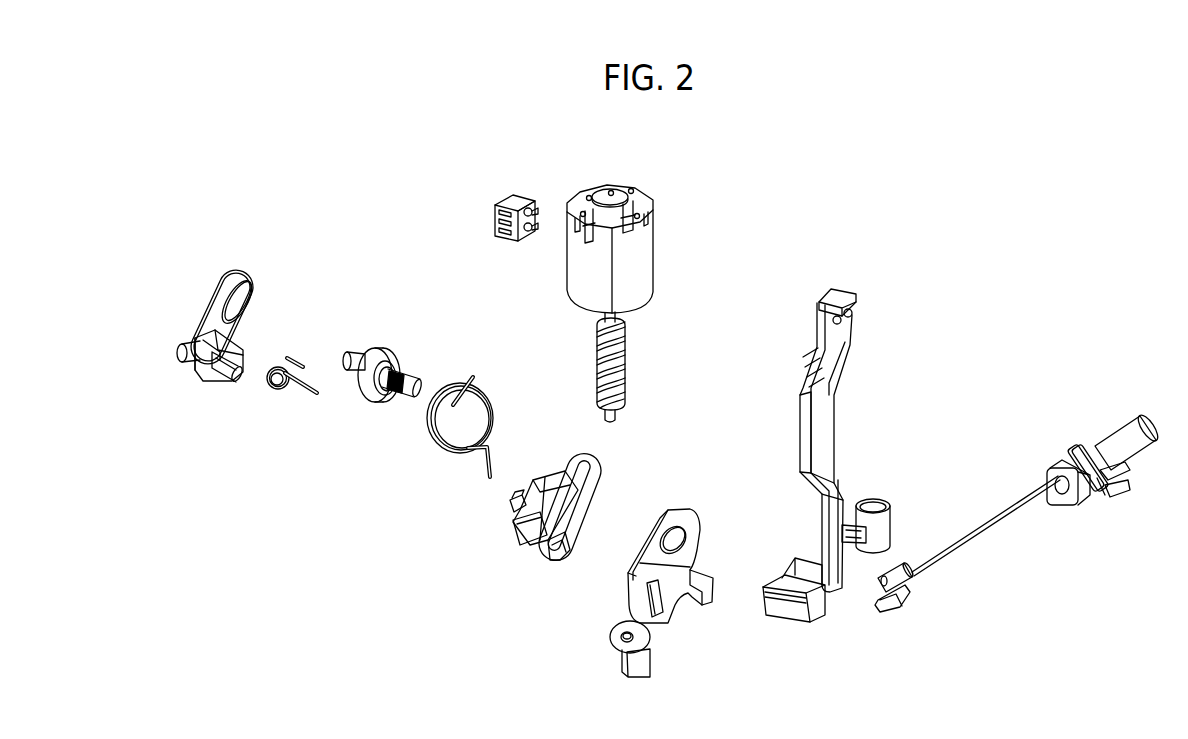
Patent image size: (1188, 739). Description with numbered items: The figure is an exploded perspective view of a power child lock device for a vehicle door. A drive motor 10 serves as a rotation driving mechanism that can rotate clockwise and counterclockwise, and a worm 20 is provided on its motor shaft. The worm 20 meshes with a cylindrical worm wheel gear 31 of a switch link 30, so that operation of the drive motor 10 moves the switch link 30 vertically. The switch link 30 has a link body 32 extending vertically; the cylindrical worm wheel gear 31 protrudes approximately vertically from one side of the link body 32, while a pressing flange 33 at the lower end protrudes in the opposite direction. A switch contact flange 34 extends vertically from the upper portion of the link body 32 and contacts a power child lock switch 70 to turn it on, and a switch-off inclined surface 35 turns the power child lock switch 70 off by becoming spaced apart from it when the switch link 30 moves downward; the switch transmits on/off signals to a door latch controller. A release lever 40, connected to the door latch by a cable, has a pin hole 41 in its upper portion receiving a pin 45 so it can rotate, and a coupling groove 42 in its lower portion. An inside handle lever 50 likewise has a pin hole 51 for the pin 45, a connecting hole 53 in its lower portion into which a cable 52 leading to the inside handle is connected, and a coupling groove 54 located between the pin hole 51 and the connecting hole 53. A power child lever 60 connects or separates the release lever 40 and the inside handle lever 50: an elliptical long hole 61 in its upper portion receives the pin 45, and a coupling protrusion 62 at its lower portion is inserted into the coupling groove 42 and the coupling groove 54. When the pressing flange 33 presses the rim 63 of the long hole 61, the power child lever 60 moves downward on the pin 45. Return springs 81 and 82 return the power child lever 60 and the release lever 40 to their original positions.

The drive motor 10 is at (650, 246).
The worm 20 is at (622, 363).
The switch link 30 is at (851, 483).
The cylindrical worm wheel gear 31 is at (888, 506).
The link body 32 is at (836, 418).
The pressing flange 33 is at (790, 608).
The switch contact flange 34 is at (806, 413).
The switch-off inclined surface 35 is at (812, 360).
The release lever 40 is at (565, 533).
The pin hole 41 is at (590, 478).
The coupling groove 42 is at (545, 564).
The pin 45 is at (390, 353).
The inside handle lever 50 is at (654, 566).
The pin hole 51 is at (684, 541).
The cable 52 is at (937, 565).
The connecting hole 53 is at (640, 639).
The coupling groove 54 is at (640, 604).
The power child lever 60 is at (225, 334).
The elliptical long hole 61 is at (255, 293).
The coupling protrusion 62 is at (226, 383).
The rim 63 is at (243, 302).
The power child lock switch 70 is at (504, 198).
The return spring 81 is at (284, 392).
The return spring 82 is at (453, 453).